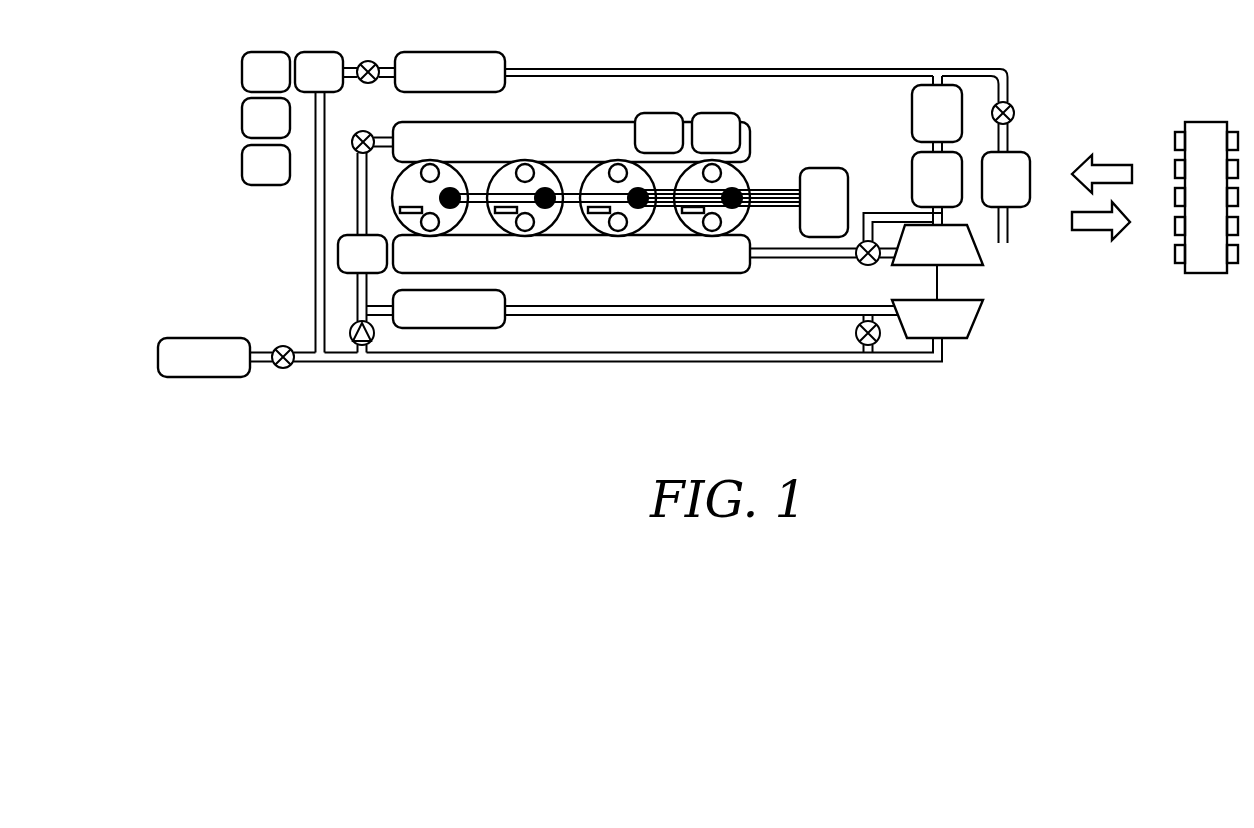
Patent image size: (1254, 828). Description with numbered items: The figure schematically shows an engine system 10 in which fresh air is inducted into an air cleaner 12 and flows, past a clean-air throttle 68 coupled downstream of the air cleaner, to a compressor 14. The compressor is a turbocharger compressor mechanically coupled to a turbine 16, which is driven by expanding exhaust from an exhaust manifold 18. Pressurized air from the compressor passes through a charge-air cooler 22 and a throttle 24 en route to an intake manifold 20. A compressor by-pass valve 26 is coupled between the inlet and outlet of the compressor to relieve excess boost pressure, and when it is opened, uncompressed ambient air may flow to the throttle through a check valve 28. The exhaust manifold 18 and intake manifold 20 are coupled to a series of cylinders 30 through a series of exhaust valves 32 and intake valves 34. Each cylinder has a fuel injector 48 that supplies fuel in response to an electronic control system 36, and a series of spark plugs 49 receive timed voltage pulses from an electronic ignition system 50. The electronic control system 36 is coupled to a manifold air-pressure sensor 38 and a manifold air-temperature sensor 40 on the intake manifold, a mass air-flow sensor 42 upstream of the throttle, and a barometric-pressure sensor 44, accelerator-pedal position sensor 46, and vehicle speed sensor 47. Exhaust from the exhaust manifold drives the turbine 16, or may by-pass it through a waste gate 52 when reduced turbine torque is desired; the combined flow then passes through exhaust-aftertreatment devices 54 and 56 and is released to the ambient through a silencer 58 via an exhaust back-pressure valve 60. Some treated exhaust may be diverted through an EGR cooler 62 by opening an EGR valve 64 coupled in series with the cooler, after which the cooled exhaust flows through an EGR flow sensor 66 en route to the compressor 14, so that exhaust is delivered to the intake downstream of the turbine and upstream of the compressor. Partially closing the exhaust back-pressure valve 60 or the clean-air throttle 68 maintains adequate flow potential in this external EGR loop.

The engine system 10 is at (163, 68).
The air cleaner 12 is at (204, 357).
The compressor 14 is at (937, 319).
The turbine 16 is at (937, 245).
The exhaust manifold 18 is at (571, 254).
The intake manifold 20 is at (571, 142).
The charge-air cooler 22 is at (449, 309).
The throttle 24 is at (368, 153).
The compressor by-pass valve 26 is at (860, 344).
The check valve 28 is at (349, 343).
The cylinders 30 is at (595, 217).
The exhaust valves 32 is at (716, 232).
The intake valves 34 is at (431, 164).
The electronic control system 36 is at (1206, 197).
The manifold air-pressure (MAP) sensor 38 is at (659, 133).
The manifold air-temperature (MAT) sensor 40 is at (716, 133).
The mass air-flow (MAF) sensor 42 is at (362, 254).
The barometric-pressure sensor 44 is at (266, 72).
The accelerator-pedal position sensor 46 is at (266, 118).
The vehicle speed sensor 47 is at (266, 165).
The fuel injector 48 is at (398, 212).
The spark plugs 49 is at (452, 207).
The electronic ignition system 50 is at (824, 202).
The waste gate 52 is at (866, 265).
The exhaust-aftertreatment device 54 is at (937, 179).
The exhaust-aftertreatment device 56 is at (937, 113).
The silencer 58 is at (1006, 179).
The exhaust back-pressure valve 60 is at (1015, 110).
The EGR cooler 62 is at (450, 72).
The EGR valve 64 is at (369, 60).
The EGR flow sensor 66 is at (319, 72).
The clean-air throttle 68 is at (282, 346).